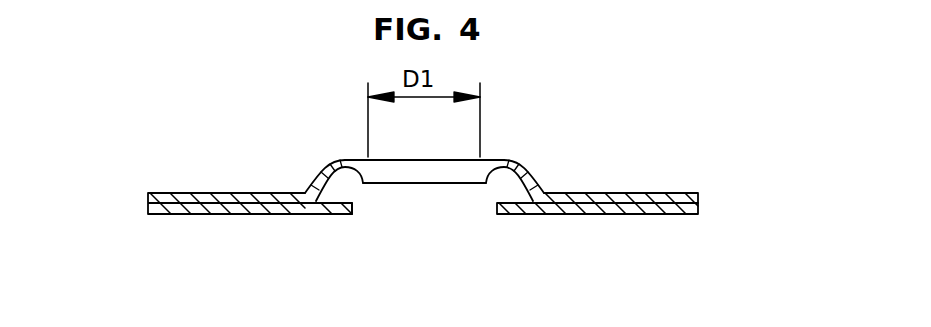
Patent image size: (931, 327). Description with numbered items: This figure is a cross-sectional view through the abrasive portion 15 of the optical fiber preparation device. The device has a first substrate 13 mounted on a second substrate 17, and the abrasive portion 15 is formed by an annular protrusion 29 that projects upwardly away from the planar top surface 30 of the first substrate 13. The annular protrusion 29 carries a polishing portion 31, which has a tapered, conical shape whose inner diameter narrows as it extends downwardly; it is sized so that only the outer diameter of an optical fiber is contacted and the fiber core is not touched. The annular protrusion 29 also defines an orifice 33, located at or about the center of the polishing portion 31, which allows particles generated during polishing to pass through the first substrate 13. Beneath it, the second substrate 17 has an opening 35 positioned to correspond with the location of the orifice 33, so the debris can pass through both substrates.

The first substrate 13 is at (698, 196).
The abrasive portion 15 is at (473, 184).
The second substrate 17 is at (699, 208).
The annular protrusion 29 is at (535, 178).
The planar top surface 30 is at (166, 193).
The polishing portion 31 is at (368, 160).
The orifice 33 is at (437, 183).
The opening 35 is at (353, 205).